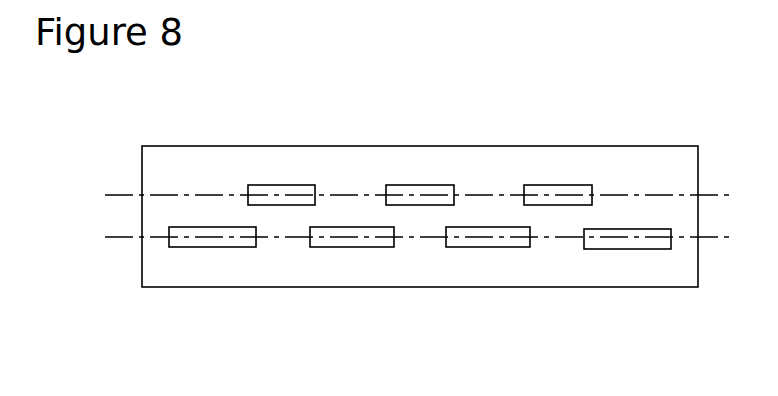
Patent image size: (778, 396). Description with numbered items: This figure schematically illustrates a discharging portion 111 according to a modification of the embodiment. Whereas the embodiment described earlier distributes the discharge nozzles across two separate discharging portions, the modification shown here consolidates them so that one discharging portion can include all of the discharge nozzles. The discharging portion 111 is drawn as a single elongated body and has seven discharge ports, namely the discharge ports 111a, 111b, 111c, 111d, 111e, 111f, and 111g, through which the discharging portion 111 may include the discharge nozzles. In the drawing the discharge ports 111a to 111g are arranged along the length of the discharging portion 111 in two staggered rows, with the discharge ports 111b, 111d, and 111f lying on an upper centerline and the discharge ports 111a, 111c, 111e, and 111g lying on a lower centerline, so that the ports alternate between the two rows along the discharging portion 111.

The discharging portion 111 is at (652, 146).
The discharge port 111a is at (215, 247).
The discharge port 111b is at (284, 205).
The discharge port 111c is at (350, 247).
The discharge port 111d is at (420, 205).
The discharge port 111e is at (487, 247).
The discharge port 111f is at (555, 205).
The discharge port 111g is at (627, 249).